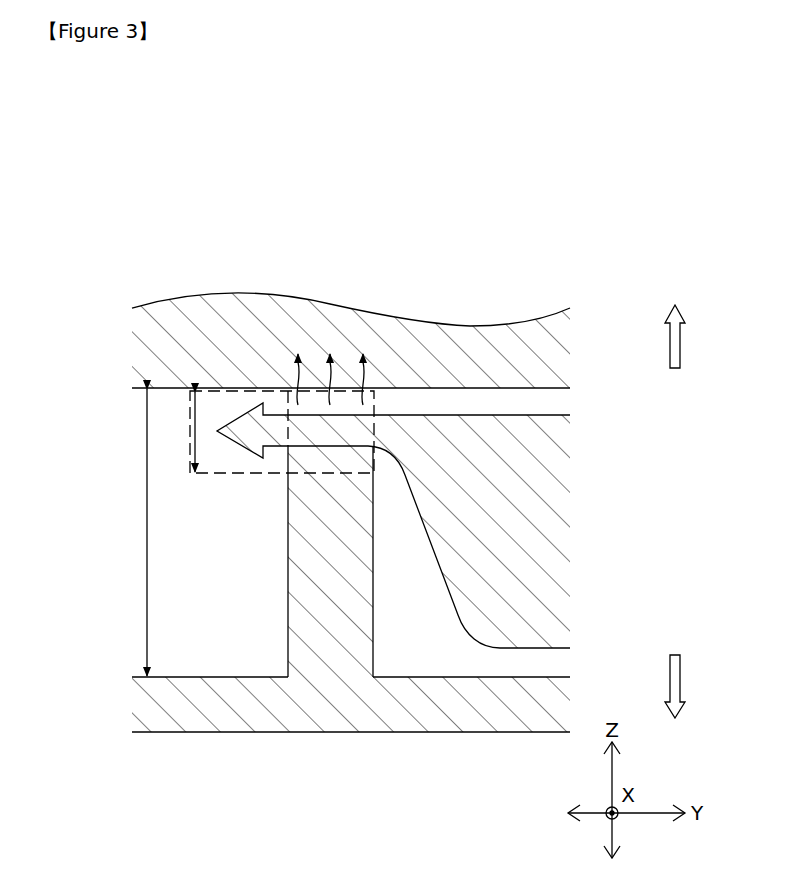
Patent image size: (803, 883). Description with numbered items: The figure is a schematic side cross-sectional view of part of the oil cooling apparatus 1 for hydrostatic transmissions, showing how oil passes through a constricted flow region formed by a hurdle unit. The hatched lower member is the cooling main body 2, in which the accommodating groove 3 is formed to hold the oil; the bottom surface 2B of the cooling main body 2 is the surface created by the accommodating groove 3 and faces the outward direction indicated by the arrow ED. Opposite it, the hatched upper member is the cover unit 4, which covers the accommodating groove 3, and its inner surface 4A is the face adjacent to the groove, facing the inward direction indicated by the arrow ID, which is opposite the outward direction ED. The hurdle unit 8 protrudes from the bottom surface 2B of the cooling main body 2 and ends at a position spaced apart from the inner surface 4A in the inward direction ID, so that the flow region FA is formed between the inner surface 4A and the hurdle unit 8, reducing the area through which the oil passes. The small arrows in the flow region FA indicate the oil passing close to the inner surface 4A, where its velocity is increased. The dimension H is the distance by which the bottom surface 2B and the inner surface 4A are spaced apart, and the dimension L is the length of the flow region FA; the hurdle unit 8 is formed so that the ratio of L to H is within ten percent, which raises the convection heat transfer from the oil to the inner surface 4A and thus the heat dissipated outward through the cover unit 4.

The oil cooling apparatus 1 is at (178, 176).
The cooling main body 2 is at (460, 812).
The bottom surface 2B is at (425, 677).
The accommodating groove 3 is at (232, 646).
The cover unit 4 is at (471, 246).
The inner surface 4A is at (427, 388).
The hurdle unit 8 is at (317, 607).
The flow region FA is at (310, 405).
The distance H is at (134, 532).
The length L is at (185, 432).
The outward direction ED is at (675, 324).
The inward direction ID is at (674, 701).